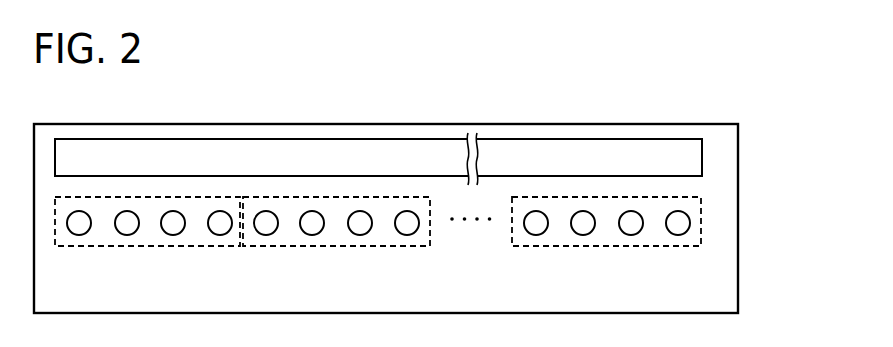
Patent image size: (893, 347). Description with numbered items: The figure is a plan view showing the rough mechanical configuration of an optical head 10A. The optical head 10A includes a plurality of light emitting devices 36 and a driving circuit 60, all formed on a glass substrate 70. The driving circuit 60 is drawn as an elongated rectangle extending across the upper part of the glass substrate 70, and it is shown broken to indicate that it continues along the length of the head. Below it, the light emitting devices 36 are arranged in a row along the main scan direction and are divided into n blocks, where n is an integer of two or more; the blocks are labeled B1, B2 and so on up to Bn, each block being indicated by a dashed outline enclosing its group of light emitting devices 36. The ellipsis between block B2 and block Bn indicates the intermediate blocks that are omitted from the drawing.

The optical head 10A is at (711, 94).
The glass substrate 70 is at (737, 217).
The driving circuit 60 is at (390, 139).
The light emitting device 36 is at (125, 232).
The block B1 is at (150, 247).
The block B2 is at (338, 247).
The block Bn is at (610, 247).